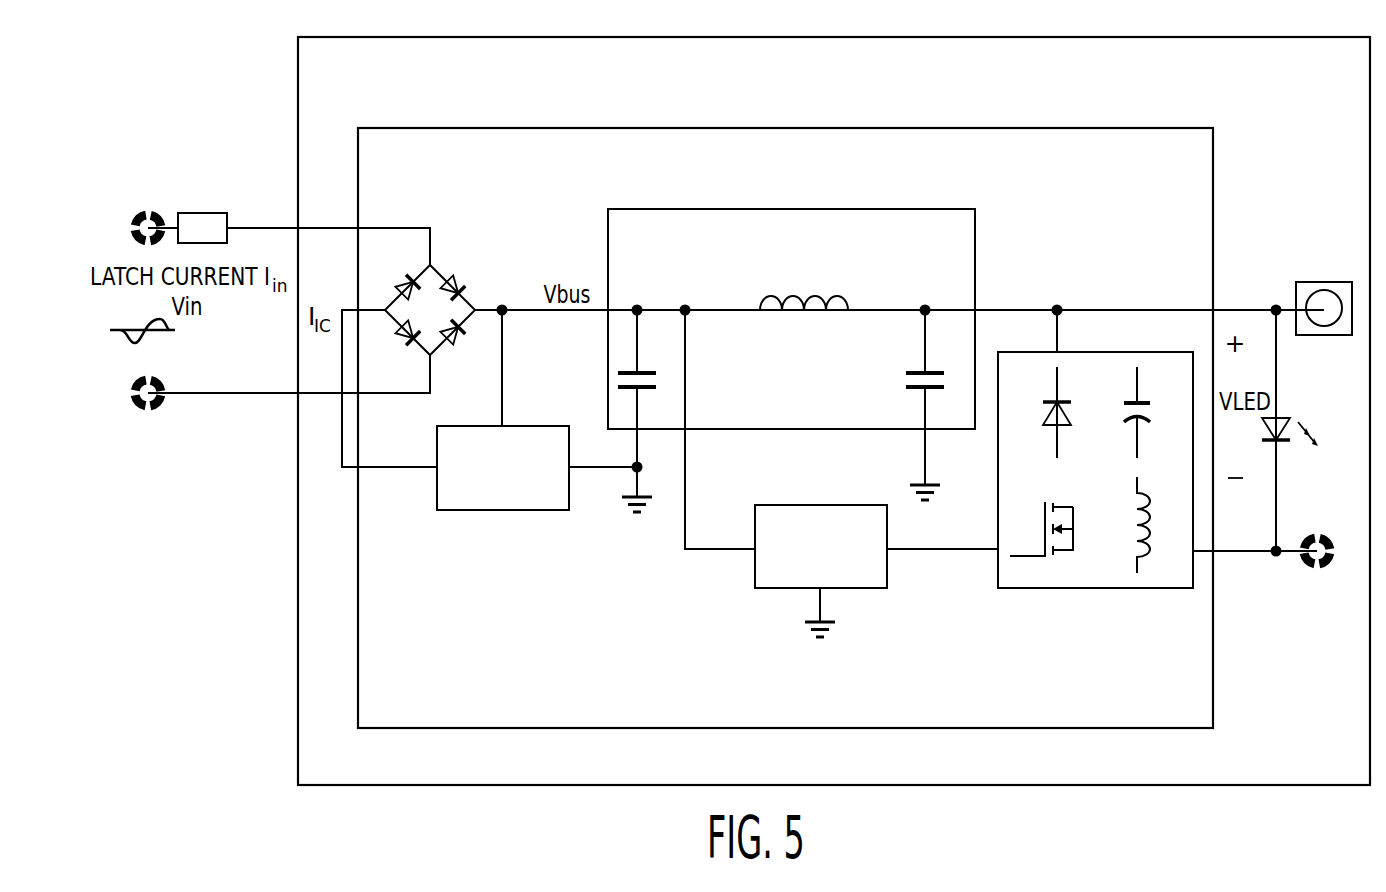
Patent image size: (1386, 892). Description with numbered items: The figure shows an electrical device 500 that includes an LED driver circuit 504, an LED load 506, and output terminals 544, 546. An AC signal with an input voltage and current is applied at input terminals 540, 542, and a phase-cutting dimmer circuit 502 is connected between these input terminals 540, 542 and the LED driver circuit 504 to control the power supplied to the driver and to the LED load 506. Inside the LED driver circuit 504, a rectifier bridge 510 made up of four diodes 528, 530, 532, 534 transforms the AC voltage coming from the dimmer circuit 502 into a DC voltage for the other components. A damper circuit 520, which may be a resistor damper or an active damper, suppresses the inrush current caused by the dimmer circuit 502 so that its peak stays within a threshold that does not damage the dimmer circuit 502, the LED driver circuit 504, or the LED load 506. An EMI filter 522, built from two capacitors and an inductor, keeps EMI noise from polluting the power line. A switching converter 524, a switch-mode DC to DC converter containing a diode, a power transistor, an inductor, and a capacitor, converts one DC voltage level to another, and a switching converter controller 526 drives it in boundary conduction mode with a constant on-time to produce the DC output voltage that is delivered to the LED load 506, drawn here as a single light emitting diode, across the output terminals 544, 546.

The electrical device 500 is at (298, 755).
The dimmer circuit 502 is at (199, 213).
The LED driver circuit 504 is at (358, 645).
The LED load 506 is at (1284, 420).
The rectifier bridge 510 is at (453, 274).
The damper circuit 520 is at (540, 426).
The EMI filter 522 is at (975, 245).
The switching converter 524 is at (998, 575).
The switching converter controller 526 is at (755, 565).
The diode 528 is at (402, 281).
The diode 530 is at (400, 336).
The diode 532 is at (455, 345).
The diode 534 is at (455, 280).
The input terminal 540 is at (143, 212).
The input terminal 542 is at (143, 411).
The output terminal 544 is at (1325, 282).
The output terminal 546 is at (1308, 568).